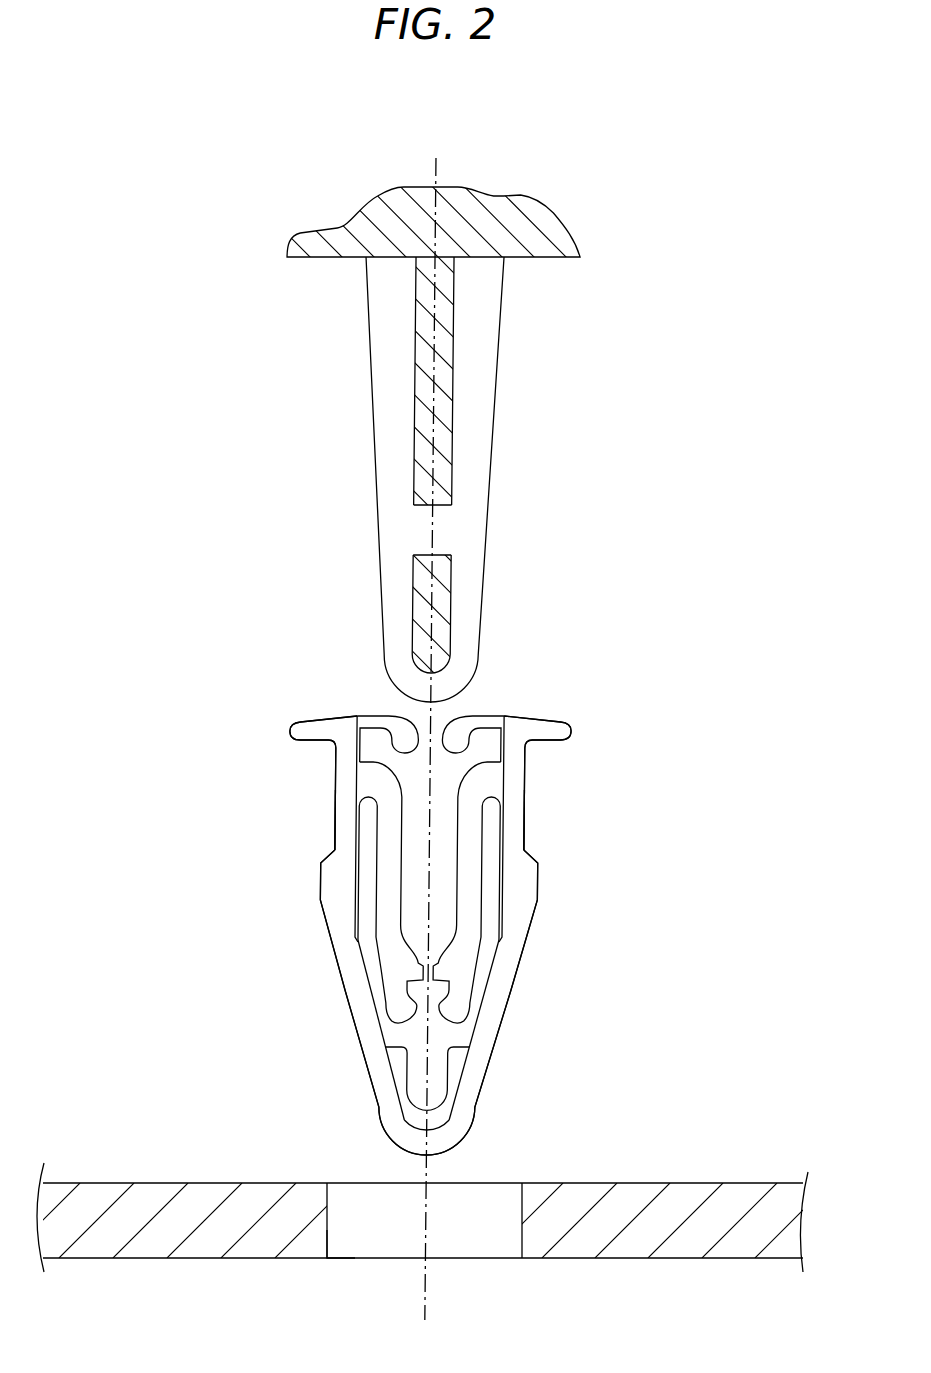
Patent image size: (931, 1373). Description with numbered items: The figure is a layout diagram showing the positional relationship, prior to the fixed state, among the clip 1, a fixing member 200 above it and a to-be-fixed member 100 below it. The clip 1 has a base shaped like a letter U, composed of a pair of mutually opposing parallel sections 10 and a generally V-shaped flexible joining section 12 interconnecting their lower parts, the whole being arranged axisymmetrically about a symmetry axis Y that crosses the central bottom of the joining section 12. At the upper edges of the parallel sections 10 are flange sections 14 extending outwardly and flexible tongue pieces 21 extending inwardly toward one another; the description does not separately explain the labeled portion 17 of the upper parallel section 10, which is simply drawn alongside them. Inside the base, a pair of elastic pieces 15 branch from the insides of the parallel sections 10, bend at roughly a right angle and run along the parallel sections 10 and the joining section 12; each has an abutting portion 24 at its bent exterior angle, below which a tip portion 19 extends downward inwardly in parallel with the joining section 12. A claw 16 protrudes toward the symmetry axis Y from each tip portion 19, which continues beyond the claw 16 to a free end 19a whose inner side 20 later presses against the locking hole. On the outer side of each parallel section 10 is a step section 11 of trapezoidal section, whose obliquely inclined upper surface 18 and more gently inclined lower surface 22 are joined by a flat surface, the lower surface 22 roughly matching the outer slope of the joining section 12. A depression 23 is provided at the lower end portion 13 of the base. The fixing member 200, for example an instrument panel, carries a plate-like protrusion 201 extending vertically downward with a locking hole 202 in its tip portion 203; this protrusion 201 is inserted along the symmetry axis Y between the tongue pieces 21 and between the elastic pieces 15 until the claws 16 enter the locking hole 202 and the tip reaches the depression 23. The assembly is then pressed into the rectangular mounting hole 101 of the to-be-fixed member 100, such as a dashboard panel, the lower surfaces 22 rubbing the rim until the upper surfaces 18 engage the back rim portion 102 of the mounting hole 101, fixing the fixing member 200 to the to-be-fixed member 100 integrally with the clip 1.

The clip 1 is at (738, 896).
The parallel section 10 is at (310, 830).
The step section 11 is at (337, 880).
The joining section 12 is at (353, 980).
The lower end portion 13 is at (445, 1152).
The flange section 14 is at (327, 721).
The elastic piece 15 is at (412, 947).
The claw 16 is at (392, 923).
The upper leg portion 17 is at (335, 780).
The upper surface 18 is at (322, 853).
The tip portion 19 is at (393, 996).
The free end 19a is at (400, 1020).
The inner side 20 is at (405, 1046).
The flexible tongue piece 21 is at (372, 716).
The lower surface 22 is at (368, 950).
The depression 23 is at (405, 1112).
The abutting portion 24 is at (422, 975).
The to-be-fixed member 100 is at (748, 1152).
The mounting hole 101 is at (470, 1247).
The back rim portion 102 is at (310, 1270).
The fixing member 200 is at (607, 194).
The protrusion 201 is at (440, 405).
The locking hole 202 is at (440, 528).
The tip portion 203 is at (437, 608).
The symmetry axis Y is at (434, 158).